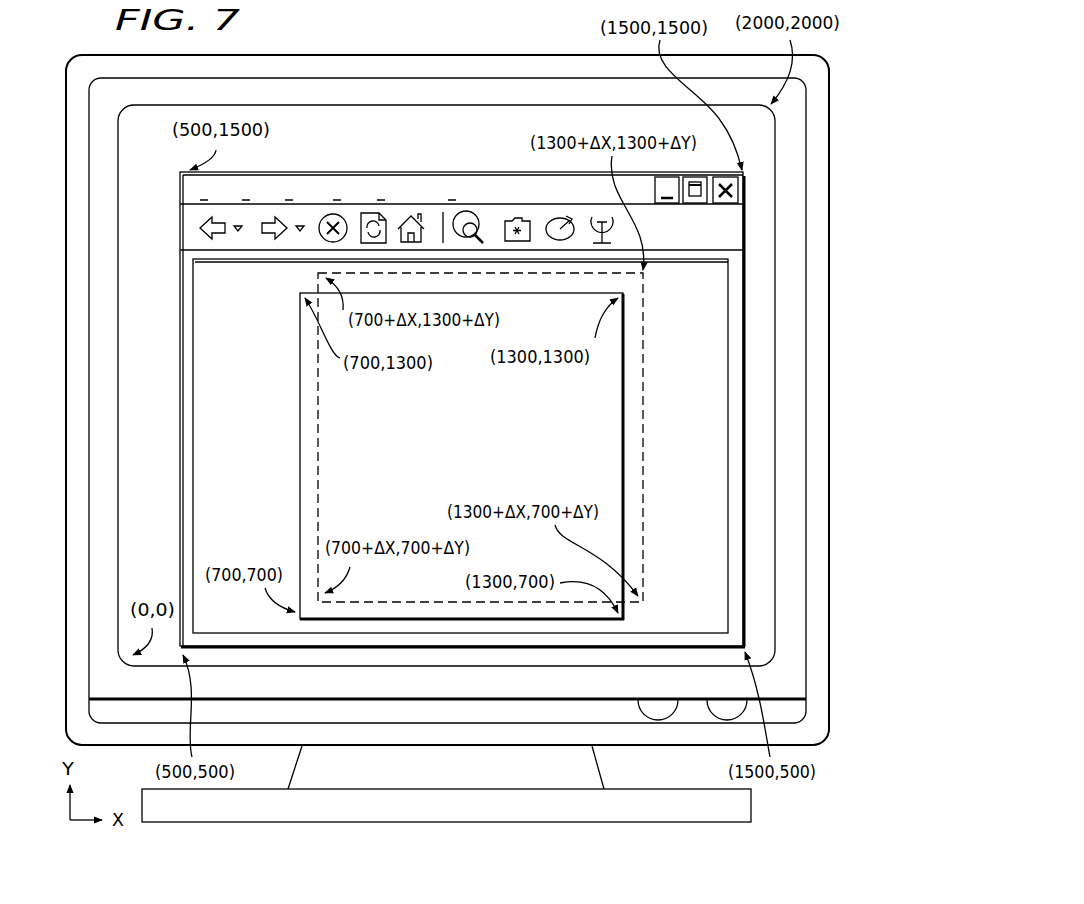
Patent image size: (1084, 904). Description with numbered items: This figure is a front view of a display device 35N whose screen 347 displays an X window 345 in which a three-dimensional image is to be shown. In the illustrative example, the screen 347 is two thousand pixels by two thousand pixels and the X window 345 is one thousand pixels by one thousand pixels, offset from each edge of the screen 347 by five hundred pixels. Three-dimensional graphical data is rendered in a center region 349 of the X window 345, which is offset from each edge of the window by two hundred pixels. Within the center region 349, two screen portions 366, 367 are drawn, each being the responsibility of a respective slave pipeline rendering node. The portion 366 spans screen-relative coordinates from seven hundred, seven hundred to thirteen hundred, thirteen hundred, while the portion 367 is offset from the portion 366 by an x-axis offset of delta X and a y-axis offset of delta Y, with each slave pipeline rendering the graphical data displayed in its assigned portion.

The display device 35N is at (313, 54).
The screen 347 is at (447, 106).
The X window 345 is at (386, 172).
The center region 349 is at (193, 450).
The screen portion 366 is at (300, 490).
The screen portion 367 is at (318, 437).